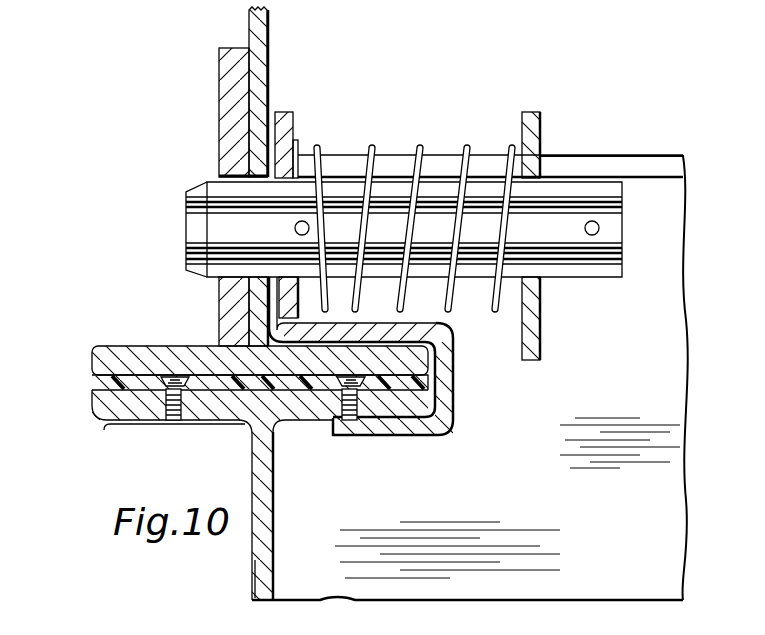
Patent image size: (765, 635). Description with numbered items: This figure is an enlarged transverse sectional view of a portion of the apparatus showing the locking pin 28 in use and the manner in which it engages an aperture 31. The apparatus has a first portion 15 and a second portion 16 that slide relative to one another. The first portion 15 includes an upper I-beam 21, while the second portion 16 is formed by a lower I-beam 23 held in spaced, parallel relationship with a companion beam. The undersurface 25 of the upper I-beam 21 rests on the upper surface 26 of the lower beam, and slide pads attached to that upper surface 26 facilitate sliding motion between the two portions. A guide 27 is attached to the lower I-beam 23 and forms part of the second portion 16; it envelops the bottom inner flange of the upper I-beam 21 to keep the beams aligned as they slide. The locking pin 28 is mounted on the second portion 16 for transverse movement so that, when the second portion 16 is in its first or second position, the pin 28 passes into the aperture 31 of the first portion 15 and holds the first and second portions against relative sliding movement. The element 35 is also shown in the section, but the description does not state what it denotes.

The first portion 15 is at (250, 79).
The I-beam 21 is at (260, 33).
The aperture 31 is at (233, 178).
The locking pin 28 is at (568, 270).
The guide 27 is at (450, 330).
The upper surface 26 is at (430, 383).
The undersurface 25 is at (100, 380).
The screw 35 is at (142, 383).
The second portion 16 is at (257, 462).
The I-beam 23 is at (263, 570).